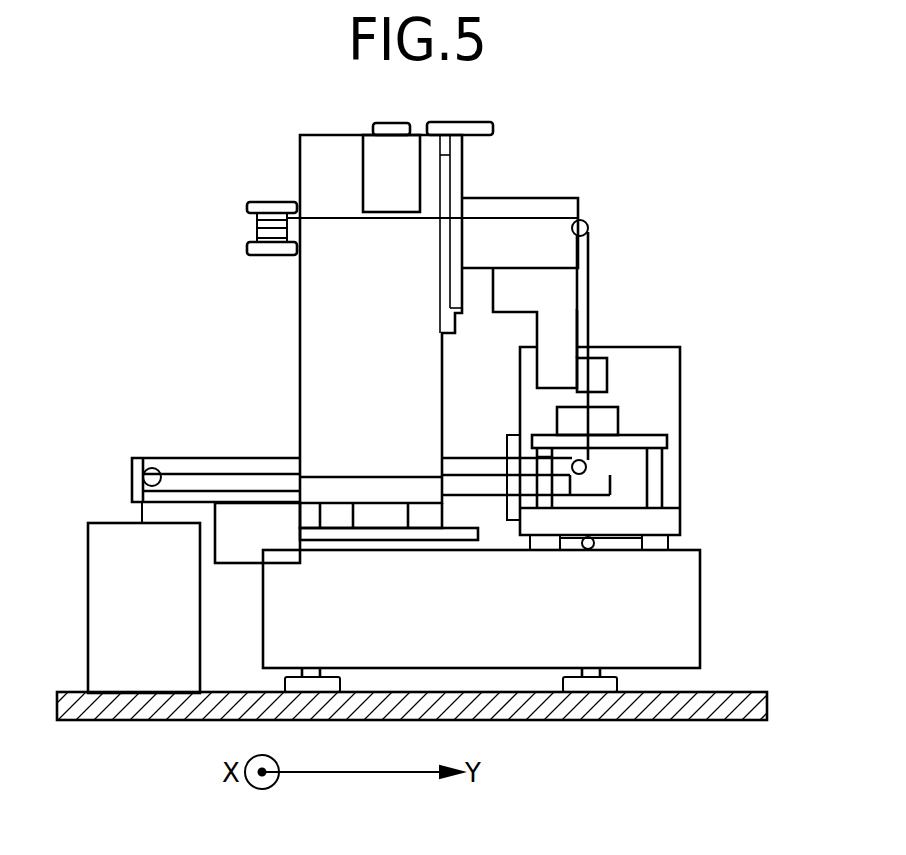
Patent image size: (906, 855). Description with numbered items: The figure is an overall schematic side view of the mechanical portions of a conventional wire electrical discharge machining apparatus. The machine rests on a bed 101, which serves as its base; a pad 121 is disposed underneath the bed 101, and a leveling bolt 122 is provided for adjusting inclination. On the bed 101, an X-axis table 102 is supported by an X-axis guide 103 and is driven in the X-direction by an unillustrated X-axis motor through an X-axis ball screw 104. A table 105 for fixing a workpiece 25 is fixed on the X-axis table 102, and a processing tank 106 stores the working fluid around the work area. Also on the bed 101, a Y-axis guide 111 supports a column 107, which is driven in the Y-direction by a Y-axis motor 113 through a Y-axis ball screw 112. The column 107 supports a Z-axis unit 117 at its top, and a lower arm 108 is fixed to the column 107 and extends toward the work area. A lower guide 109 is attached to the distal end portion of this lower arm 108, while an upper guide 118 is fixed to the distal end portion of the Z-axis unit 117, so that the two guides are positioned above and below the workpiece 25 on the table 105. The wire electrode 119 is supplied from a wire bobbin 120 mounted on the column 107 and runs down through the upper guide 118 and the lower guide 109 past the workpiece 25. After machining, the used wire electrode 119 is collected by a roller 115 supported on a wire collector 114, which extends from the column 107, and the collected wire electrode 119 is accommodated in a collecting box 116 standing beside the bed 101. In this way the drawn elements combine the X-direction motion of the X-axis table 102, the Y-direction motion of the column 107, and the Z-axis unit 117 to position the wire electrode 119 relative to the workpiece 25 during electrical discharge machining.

The workpiece 25 is at (603, 417).
The bed 101 is at (690, 617).
The X-axis table 102 is at (682, 525).
The X-axis guide 103 is at (652, 543).
The X-axis ball screw 104 is at (588, 553).
The table 105 is at (667, 443).
The processing tank 106 is at (680, 373).
The column 107 is at (308, 313).
The lower arm 108 is at (463, 457).
The lower guide 109 is at (587, 466).
The Y-axis guide 111 is at (333, 547).
The Y-axis ball screw 112 is at (416, 542).
The Y-axis motor 113 is at (238, 545).
The wire collector 114 is at (218, 458).
The roller 115 is at (133, 467).
The collecting box 116 is at (104, 575).
The Z-axis unit 117 is at (610, 168).
The upper guide 118 is at (605, 351).
The wire electrode 119 is at (590, 258).
The wire bobbin 120 is at (247, 203).
The pad 121 is at (589, 695).
The leveling bolt 122 is at (588, 673).